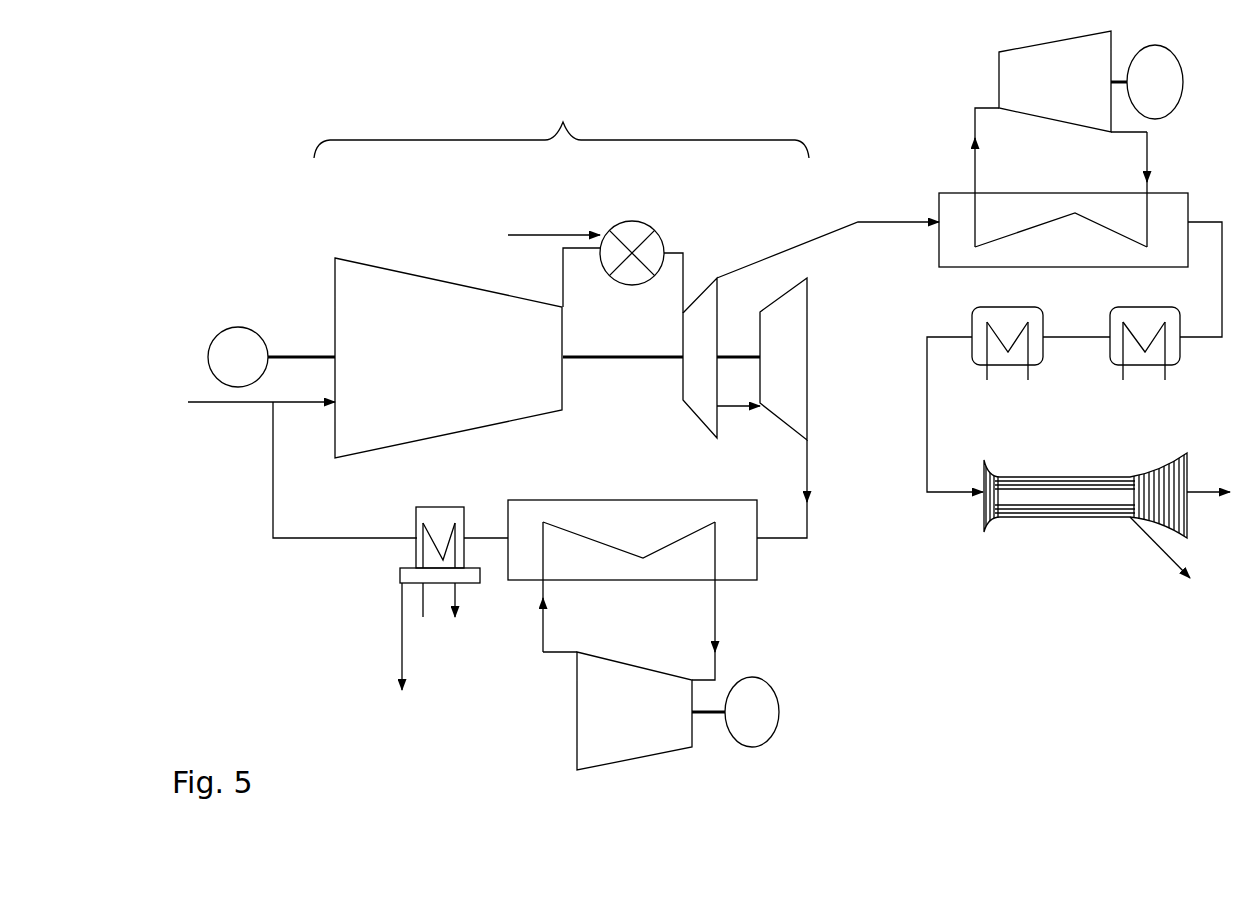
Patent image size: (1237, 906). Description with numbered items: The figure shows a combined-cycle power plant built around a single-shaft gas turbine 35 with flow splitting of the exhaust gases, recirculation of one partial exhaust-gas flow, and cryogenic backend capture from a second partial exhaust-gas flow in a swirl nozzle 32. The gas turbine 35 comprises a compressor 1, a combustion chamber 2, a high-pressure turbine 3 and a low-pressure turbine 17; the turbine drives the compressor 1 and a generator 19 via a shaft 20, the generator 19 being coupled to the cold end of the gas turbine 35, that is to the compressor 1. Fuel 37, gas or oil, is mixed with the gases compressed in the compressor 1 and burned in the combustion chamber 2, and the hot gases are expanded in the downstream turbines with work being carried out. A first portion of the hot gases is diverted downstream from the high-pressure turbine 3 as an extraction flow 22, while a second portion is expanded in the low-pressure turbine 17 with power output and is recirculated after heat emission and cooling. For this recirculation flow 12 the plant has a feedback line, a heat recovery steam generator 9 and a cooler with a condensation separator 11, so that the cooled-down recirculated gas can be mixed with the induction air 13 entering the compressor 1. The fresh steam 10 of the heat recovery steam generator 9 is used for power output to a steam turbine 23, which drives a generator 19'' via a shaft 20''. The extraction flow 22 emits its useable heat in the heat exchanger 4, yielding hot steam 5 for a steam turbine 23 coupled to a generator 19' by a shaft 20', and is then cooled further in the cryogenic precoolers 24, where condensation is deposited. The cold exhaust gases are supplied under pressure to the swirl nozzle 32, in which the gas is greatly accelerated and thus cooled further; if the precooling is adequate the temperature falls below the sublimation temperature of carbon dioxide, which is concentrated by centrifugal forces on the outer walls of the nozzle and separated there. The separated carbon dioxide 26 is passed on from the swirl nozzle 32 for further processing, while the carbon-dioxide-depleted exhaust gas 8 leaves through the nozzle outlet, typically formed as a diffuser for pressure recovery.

The compressor 1 is at (448, 358).
The combustion chamber 2 is at (623, 248).
The high-pressure turbine 3 is at (700, 358).
The HRSG/heat exchanger 4 is at (1063, 230).
The fresh steam or hot steam for the steam turbine/cogeneration 5 is at (972, 170).
The CO2-depleted exhaust gas 8 is at (1208, 465).
The HRSG (waste-heat boiler) 9 is at (632, 576).
The fresh steam for the steam turbine/cogeneration 10 is at (718, 630).
The cooler with condensation separator 11 is at (440, 586).
The recirculation flow 12 is at (516, 484).
The induction air 13 is at (261, 421).
The low-pressure turbine 17 is at (782, 408).
The generator 19 is at (238, 357).
The generator 19' is at (1155, 82).
The generator 19'' is at (752, 712).
The shaft 20 is at (301, 342).
The shaft 20' is at (1128, 50).
The shaft 20'' is at (713, 748).
The extraction flow 22 is at (828, 239).
The steam turbine 23 is at (844, 400).
The cryogenic precooler 24 is at (1076, 344).
The separated CO2 26 is at (1164, 565).
The swirl nozzle 32 is at (1085, 497).
The gas turbine 35 is at (561, 129).
The fuel 37 is at (554, 221).